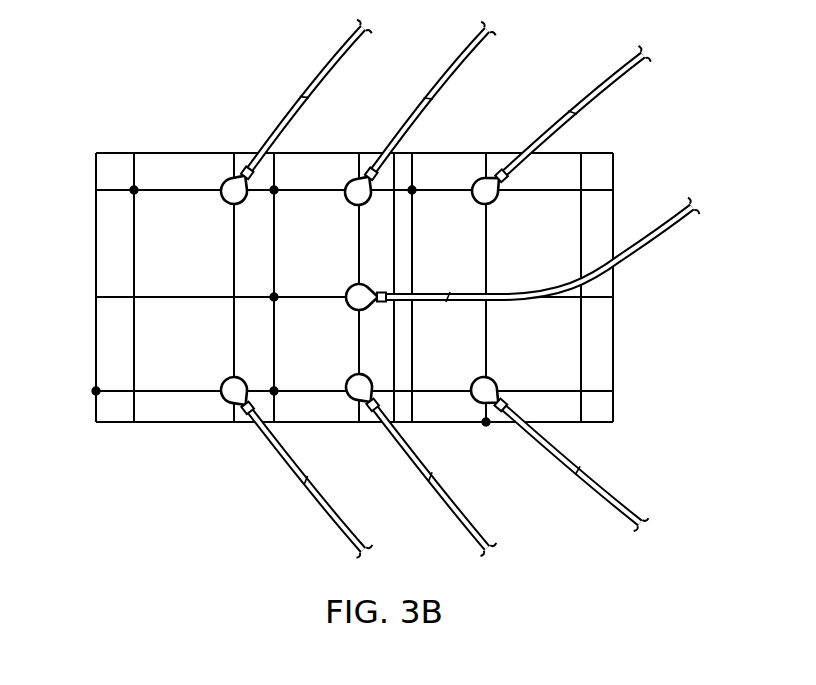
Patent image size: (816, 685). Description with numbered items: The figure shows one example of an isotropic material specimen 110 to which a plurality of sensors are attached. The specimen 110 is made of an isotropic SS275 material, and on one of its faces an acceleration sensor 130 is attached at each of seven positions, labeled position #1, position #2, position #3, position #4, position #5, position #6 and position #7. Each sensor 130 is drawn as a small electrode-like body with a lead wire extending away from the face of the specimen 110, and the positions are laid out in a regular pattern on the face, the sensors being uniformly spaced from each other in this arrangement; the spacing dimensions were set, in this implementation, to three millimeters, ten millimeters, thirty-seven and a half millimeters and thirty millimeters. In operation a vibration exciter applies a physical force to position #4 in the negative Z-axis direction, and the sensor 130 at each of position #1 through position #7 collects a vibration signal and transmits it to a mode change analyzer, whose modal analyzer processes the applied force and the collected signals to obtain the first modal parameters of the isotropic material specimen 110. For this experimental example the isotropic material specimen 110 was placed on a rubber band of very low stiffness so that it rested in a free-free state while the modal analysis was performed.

The isotropic material specimen 110 is at (608, 342).
The acceleration sensor 130 is at (549, 436).
The position # 1 is at (284, 118).
The position # 2 is at (407, 119).
The position # 3 is at (548, 131).
The position # 4 is at (511, 260).
The position # 5 is at (283, 465).
The position # 6 is at (409, 462).
The position # 7 is at (533, 362).